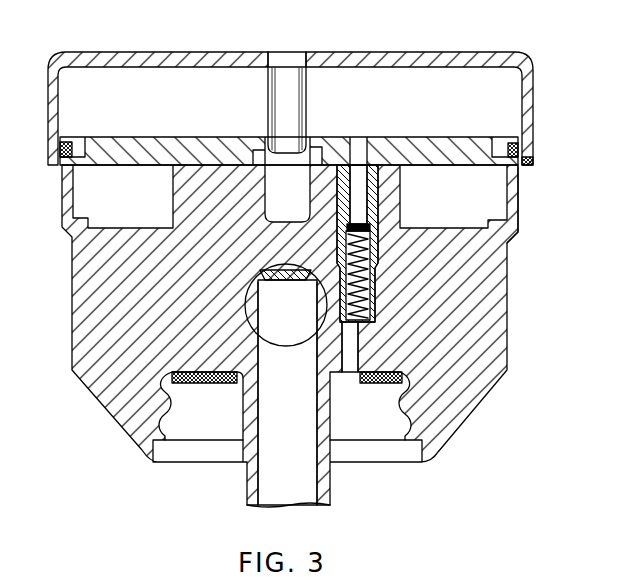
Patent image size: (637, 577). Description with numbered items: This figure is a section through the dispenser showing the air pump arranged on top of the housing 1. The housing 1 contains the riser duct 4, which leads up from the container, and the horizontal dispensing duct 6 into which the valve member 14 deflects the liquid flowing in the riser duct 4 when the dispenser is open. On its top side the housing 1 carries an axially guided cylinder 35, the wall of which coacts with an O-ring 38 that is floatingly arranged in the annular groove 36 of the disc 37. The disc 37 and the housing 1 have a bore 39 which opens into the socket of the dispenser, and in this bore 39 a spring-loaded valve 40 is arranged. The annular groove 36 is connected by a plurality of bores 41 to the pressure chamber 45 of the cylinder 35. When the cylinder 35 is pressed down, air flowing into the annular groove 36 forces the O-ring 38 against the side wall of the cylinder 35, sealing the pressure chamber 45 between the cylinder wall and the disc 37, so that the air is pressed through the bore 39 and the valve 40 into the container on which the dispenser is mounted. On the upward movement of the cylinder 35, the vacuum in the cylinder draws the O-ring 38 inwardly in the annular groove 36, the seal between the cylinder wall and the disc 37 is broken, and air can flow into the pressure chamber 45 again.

The housing 1 is at (440, 420).
The riser duct 4 is at (292, 404).
The dispensing duct 6 is at (250, 315).
The valve member 14 is at (285, 281).
The cylinder 35 is at (218, 62).
The annular groove 36 is at (513, 165).
The disc 37 is at (410, 147).
The O-ring 38 is at (528, 160).
The bore 39 is at (357, 150).
The spring-loaded valve 40 is at (360, 222).
The bores 41 is at (84, 143).
The pressure chamber 45 is at (240, 108).